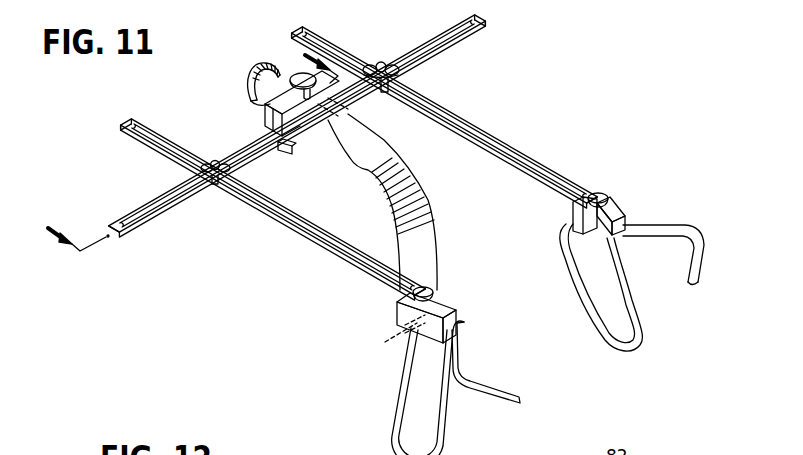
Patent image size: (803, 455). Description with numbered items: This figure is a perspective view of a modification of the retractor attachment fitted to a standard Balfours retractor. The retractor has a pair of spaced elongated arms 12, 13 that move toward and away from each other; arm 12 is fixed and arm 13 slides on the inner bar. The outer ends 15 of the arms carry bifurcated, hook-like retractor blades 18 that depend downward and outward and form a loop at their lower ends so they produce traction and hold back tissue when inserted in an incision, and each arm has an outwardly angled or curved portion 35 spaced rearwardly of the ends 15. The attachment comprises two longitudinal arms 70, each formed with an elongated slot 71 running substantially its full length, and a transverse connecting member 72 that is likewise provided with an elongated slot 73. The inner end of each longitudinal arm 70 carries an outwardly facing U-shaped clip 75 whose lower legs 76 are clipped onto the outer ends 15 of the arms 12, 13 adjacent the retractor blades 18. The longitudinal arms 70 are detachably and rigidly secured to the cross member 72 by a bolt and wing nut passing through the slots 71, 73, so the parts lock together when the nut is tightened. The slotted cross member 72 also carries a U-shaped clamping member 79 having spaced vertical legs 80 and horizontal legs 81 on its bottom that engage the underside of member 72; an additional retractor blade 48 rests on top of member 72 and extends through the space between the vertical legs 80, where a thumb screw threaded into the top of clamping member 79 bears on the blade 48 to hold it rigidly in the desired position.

The arm 12 is at (735, 259).
The arm 13 is at (490, 380).
The end of the arm 15 is at (398, 310).
The retractor blade 18 is at (448, 420).
The curved portion 35 is at (685, 238).
The retractor blade 48 is at (385, 150).
The longitudinal arm 70 is at (480, 112).
The elongated slot 71 is at (515, 148).
The transverse connecting member 72 is at (238, 146).
The elongated slot 73 is at (147, 221).
The U-shaped clip 75 is at (428, 290).
The lower legs of the clip 76 is at (397, 339).
The U-shaped clamping member 79 is at (248, 98).
The vertical legs 80 is at (264, 117).
The horizontal legs 81 is at (292, 155).